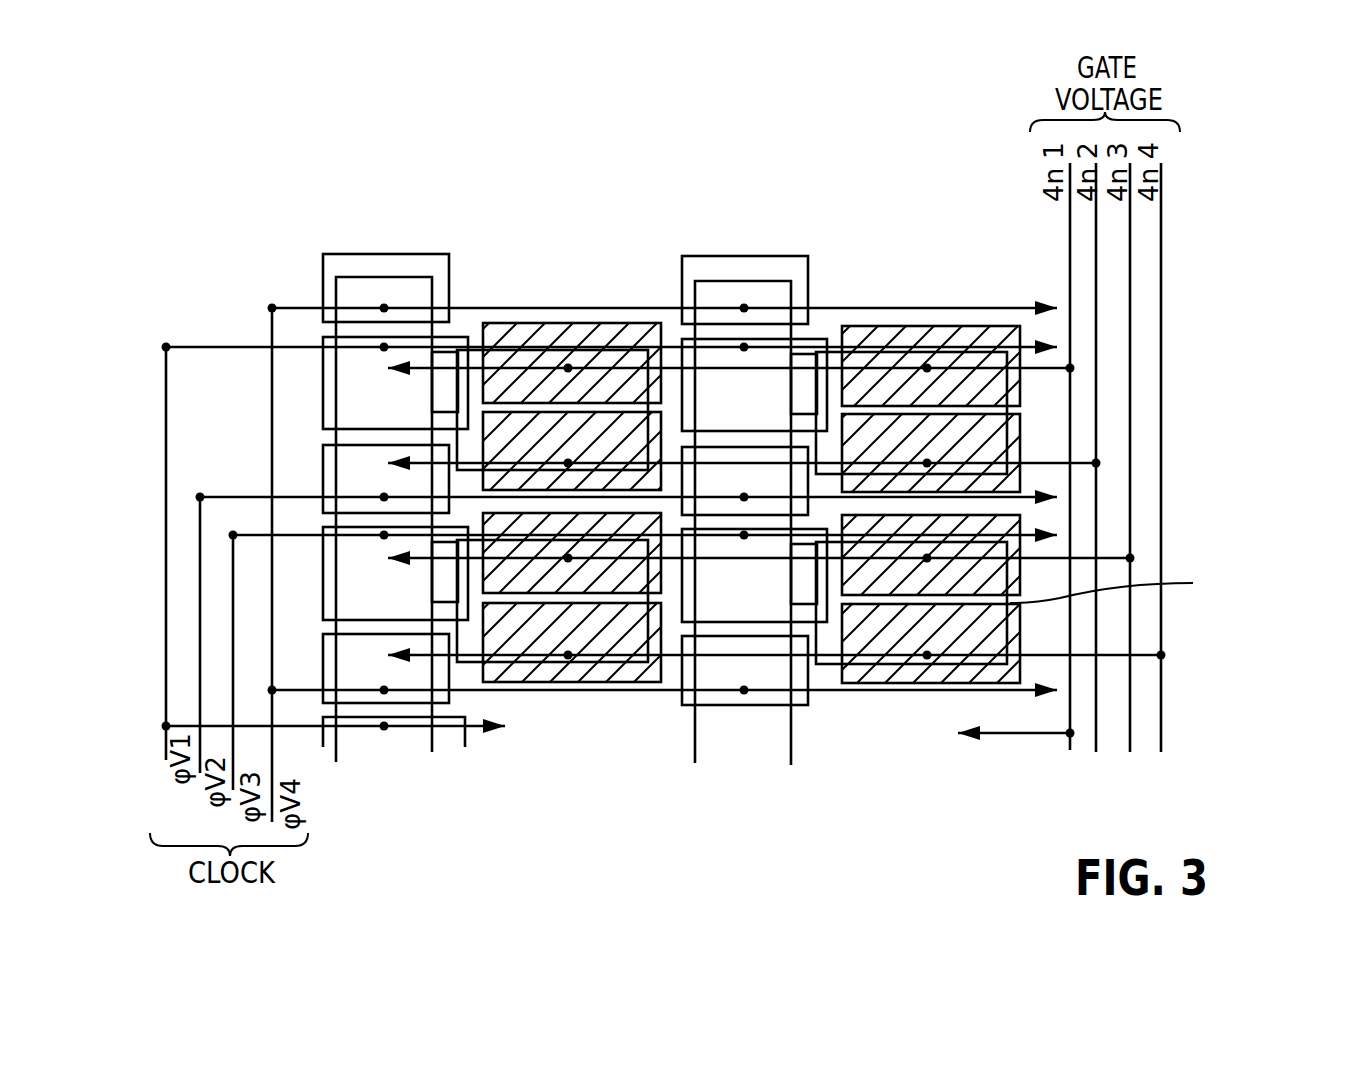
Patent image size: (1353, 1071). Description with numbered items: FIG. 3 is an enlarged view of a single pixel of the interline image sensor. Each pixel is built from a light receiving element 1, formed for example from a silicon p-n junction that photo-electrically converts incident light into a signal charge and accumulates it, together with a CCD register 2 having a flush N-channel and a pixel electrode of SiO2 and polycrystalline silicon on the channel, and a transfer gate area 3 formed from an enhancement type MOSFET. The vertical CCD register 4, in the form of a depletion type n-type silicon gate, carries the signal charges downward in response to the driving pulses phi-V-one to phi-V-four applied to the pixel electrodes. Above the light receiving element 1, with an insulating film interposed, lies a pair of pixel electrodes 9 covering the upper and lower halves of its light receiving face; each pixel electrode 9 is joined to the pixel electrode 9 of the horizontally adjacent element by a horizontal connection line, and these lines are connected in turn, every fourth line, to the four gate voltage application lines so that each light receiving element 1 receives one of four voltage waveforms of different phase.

The light receiving element 1 is at (833, 348).
The CCD register 2 is at (337, 253).
The transfer gate area 3 is at (448, 352).
The vertical CCD register 4 is at (432, 752).
The pixel electrode 9 is at (492, 322).